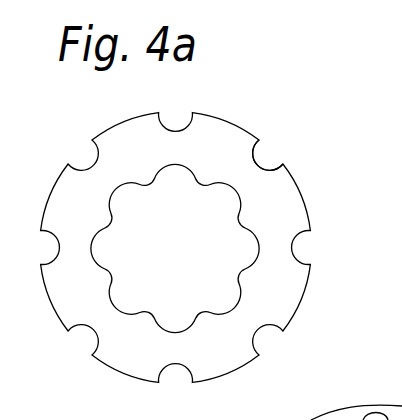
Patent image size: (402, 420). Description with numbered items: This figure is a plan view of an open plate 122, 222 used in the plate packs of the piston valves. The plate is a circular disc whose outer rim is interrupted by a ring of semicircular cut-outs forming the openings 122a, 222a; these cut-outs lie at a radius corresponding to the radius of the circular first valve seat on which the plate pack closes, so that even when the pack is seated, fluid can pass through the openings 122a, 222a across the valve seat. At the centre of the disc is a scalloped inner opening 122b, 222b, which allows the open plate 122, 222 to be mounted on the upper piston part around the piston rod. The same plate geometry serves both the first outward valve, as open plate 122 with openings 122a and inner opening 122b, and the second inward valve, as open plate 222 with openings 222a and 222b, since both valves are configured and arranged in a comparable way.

The open plate 122 is at (176, 237).
The open plate 222 is at (213, 148).
The openings 122a is at (318, 153).
The openings 222a is at (267, 157).
The inner opening 122b is at (144, 287).
The openings 222b is at (170, 275).